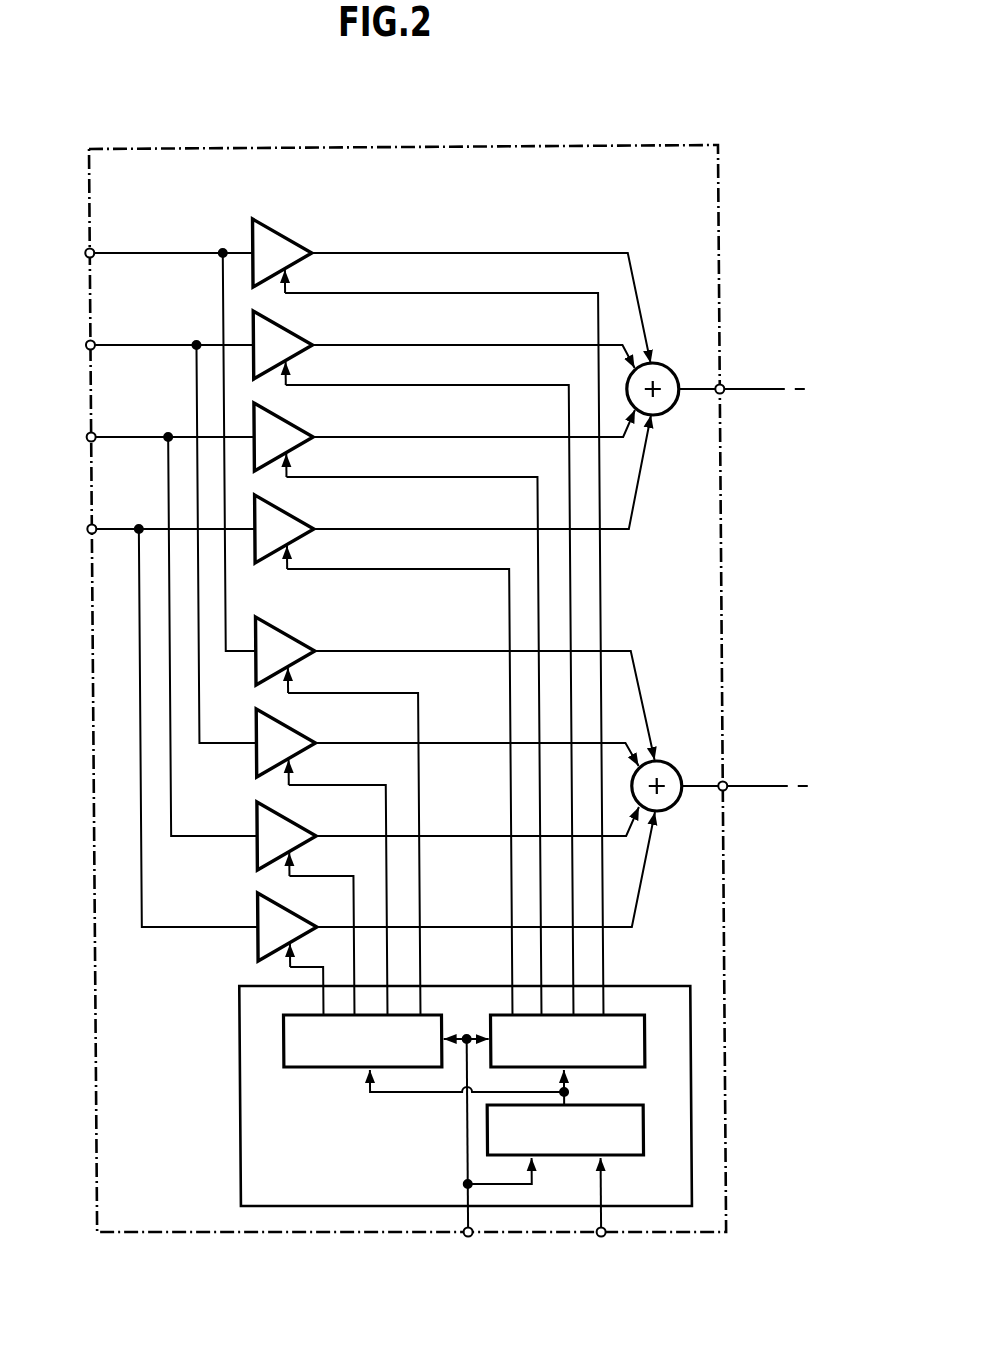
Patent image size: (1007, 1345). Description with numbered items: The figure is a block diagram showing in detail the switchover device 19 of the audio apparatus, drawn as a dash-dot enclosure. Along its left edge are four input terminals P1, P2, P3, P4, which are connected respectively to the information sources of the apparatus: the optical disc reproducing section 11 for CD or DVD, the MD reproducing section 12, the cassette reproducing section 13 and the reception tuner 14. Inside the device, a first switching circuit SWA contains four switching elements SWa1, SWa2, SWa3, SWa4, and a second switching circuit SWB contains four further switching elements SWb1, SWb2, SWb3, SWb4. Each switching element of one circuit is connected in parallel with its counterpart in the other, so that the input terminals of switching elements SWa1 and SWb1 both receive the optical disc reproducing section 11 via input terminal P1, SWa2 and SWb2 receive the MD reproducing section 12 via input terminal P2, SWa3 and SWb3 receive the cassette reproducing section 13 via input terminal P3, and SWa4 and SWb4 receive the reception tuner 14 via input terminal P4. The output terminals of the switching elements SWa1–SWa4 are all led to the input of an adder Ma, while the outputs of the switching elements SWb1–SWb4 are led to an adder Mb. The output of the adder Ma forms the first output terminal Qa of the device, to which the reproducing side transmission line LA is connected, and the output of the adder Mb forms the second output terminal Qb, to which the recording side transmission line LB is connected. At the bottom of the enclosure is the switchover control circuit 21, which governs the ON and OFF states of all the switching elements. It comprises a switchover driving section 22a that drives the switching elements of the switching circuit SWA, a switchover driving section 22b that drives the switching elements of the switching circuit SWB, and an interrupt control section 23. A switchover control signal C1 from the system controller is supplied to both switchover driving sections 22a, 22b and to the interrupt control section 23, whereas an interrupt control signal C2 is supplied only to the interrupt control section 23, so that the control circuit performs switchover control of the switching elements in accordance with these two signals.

The switchover device 19 is at (489, 146).
The switchover control circuit 21 is at (233, 1030).
The switchover driving section 22a is at (638, 1021).
The switchover driving section 22b is at (277, 1027).
The interrupt control section 23 is at (636, 1125).
The switching circuit SWA is at (435, 188).
The switching circuit SWB is at (440, 605).
The switching element SWa1 is at (300, 243).
The switching element SWa2 is at (300, 335).
The switching element SWa3 is at (300, 427).
The switching element SWa4 is at (300, 519).
The switching element SWb1 is at (300, 641).
The switching element SWb2 is at (300, 733).
The switching element SWb3 is at (300, 826).
The switching element SWb4 is at (300, 917).
The adder Ma is at (668, 366).
The adder Mb is at (670, 763).
The output terminal Qa is at (714, 393).
The output terminal Qb is at (714, 790).
The reproducing side transmission line LA is at (752, 385).
The recording side transmission line LB is at (752, 782).
The input terminal P1 is at (93, 250).
The input terminal P2 is at (93, 342).
The input terminal P3 is at (93, 434).
The input terminal P4 is at (93, 526).
The optical disc reproducing section 11 is at (64, 254).
The MD reproducing section 12 is at (64, 346).
The cassette reproducing section 13 is at (65, 438).
The reception tuner 14 is at (66, 530).
The switchover control signal C1 is at (469, 1151).
The interrupt control signal C2 is at (603, 1210).